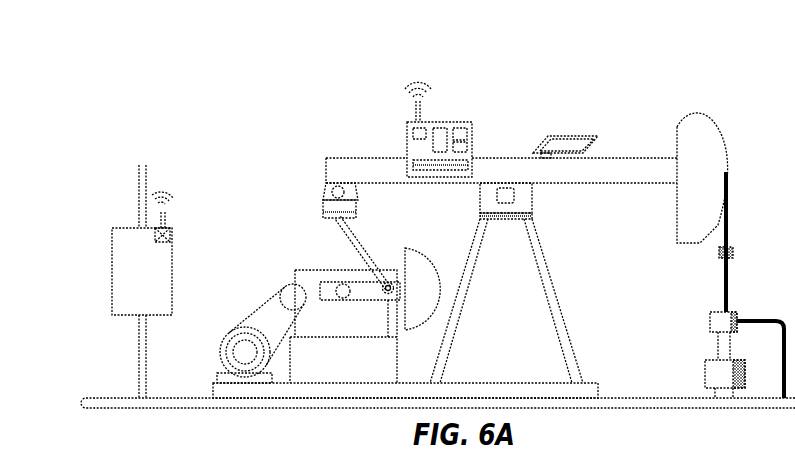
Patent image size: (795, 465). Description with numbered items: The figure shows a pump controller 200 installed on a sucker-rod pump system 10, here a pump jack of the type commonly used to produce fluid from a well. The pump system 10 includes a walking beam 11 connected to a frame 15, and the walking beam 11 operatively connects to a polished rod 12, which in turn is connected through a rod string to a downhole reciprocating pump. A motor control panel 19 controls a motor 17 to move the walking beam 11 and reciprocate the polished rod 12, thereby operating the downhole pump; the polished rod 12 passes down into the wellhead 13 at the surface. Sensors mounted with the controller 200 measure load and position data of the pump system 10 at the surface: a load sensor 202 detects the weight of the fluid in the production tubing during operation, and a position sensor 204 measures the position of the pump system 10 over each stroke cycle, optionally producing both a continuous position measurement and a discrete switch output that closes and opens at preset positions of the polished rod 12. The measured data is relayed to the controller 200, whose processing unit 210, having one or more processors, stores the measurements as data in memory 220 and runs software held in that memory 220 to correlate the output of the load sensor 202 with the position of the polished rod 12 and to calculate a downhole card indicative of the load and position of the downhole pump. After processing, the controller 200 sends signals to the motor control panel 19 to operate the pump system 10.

The sucker-rod pump system 10 is at (708, 84).
The walking beam 11 is at (636, 150).
The polished rod 12 is at (729, 297).
The wellhead 13 is at (712, 313).
The frame 15 is at (478, 256).
The motor 17 is at (219, 347).
The motor control panel 19 is at (173, 291).
The pump controller 200 is at (465, 122).
The load sensor 202 is at (473, 129).
The position sensor 204 is at (473, 149).
The processing unit 210 is at (431, 122).
The memory 220 is at (412, 130).